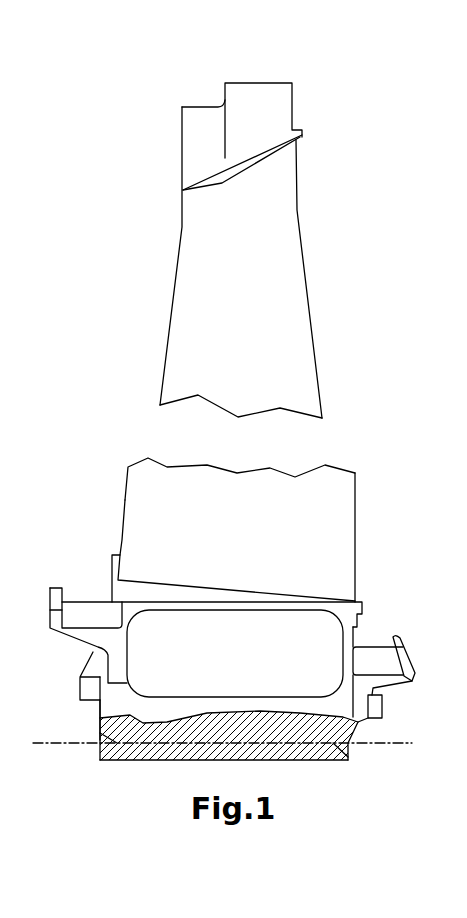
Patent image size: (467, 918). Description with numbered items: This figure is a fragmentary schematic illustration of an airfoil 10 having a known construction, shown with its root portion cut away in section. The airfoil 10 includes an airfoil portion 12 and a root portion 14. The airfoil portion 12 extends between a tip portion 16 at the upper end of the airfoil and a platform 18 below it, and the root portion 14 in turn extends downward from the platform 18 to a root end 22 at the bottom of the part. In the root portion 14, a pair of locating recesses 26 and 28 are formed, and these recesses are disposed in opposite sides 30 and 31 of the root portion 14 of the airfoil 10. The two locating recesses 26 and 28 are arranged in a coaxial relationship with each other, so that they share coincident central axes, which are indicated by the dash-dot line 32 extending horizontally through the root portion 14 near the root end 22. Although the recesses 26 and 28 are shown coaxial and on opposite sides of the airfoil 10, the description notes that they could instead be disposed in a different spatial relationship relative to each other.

The airfoil 10 is at (122, 178).
The airfoil portion 12 is at (170, 480).
The root portion 14 is at (362, 729).
The tip portion 16 is at (262, 83).
The platform 18 is at (357, 607).
The root end 22 is at (310, 762).
The locating recess 26 is at (100, 747).
The locating recess 28 is at (350, 748).
The side of root portion 30 is at (98, 715).
The side of root portion 31 is at (382, 708).
The central axes 32 is at (393, 745).